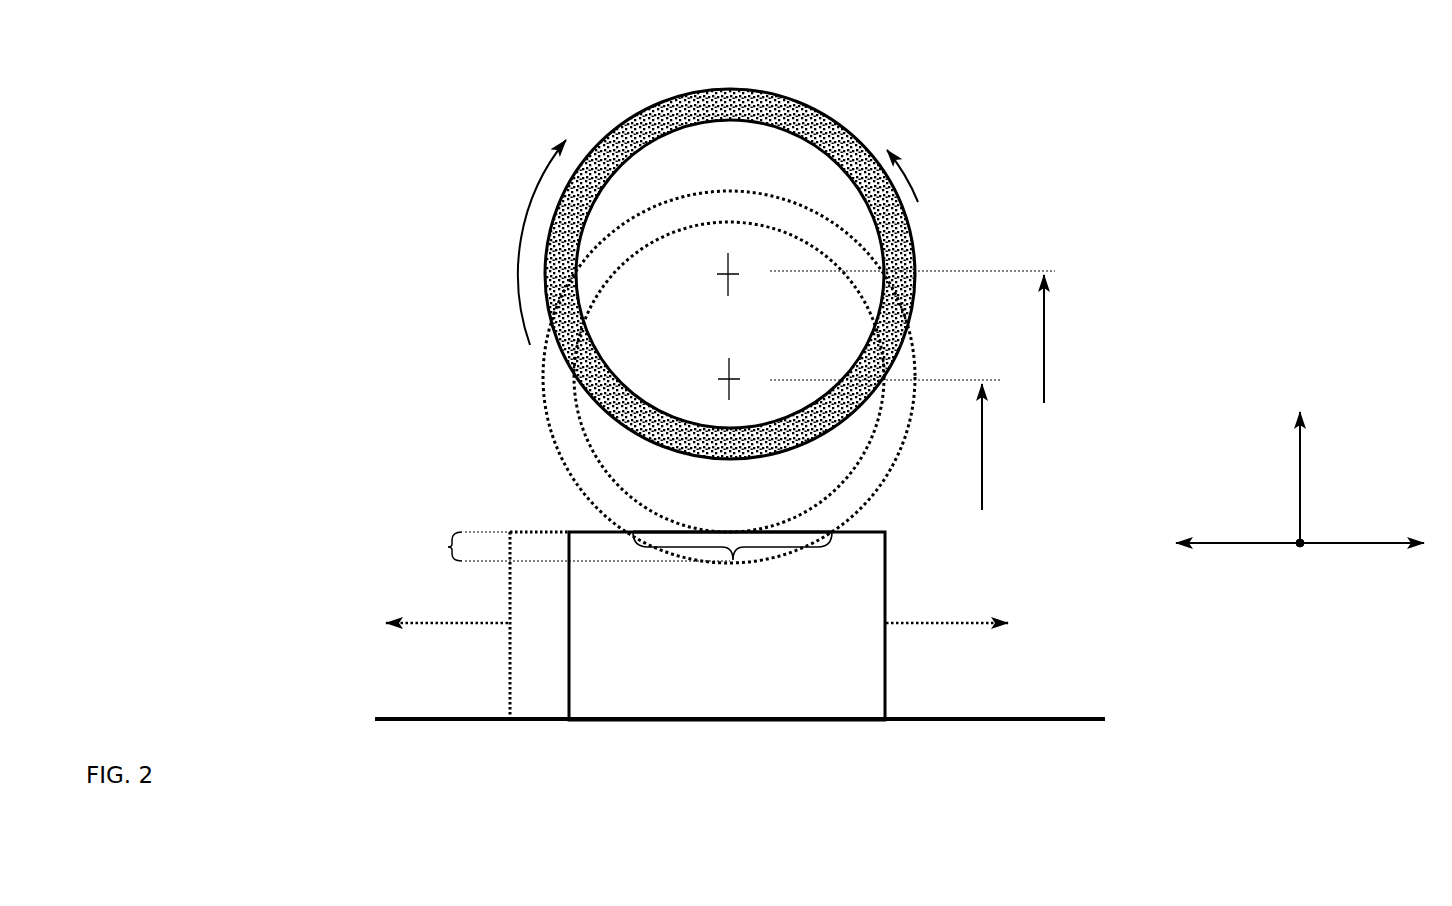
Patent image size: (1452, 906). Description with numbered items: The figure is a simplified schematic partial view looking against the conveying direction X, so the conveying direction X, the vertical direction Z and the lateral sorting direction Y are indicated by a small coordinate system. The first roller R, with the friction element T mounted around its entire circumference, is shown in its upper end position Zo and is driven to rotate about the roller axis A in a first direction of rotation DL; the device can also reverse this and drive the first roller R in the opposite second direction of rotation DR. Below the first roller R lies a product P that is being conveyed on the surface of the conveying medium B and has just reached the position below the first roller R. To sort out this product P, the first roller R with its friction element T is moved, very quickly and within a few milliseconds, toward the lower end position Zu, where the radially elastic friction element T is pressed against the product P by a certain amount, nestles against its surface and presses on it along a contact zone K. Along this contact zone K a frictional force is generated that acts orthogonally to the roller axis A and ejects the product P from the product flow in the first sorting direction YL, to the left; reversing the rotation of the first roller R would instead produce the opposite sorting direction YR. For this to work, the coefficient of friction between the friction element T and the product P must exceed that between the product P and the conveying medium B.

The first roller R is at (632, 114).
The friction element T is at (833, 103).
The roller axis A is at (726, 272).
The first direction of rotation DL is at (522, 199).
The second direction of rotation DR is at (916, 186).
The upper end position Zo is at (1046, 350).
The lower end position Zu is at (983, 430).
The product P is at (727, 626).
The contact zone K is at (732, 569).
The conveying medium B is at (1013, 719).
The first sorting direction YL is at (477, 625).
The opposite sorting direction YR is at (947, 606).
The vertical direction Z is at (1305, 447).
The sorting direction Y is at (1212, 549).
The conveying direction X is at (1302, 549).